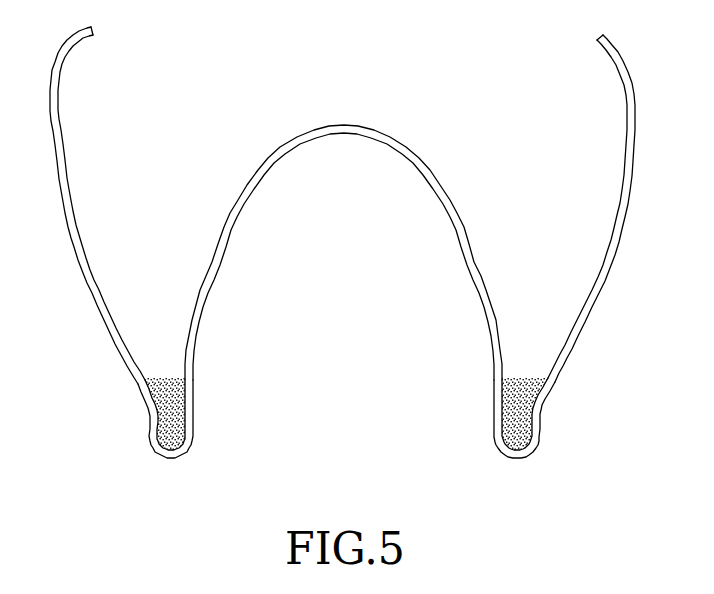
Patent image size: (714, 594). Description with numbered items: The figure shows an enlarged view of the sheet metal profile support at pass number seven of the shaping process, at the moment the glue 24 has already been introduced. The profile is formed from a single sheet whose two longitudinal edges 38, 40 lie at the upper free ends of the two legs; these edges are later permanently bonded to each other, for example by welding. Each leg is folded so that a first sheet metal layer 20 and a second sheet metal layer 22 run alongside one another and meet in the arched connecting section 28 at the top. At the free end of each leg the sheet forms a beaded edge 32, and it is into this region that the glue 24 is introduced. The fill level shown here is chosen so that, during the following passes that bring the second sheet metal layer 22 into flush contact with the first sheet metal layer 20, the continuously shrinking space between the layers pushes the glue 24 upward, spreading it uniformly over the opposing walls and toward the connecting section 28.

The first sheet metal layer 20 is at (213, 262).
The second sheet metal layer 22 is at (81, 252).
The glue 24 is at (160, 393).
The connecting section 28 is at (325, 141).
The beaded edge 32 is at (161, 457).
The longitudinal edge 38 is at (93, 31).
The longitudinal edge 40 is at (594, 37).